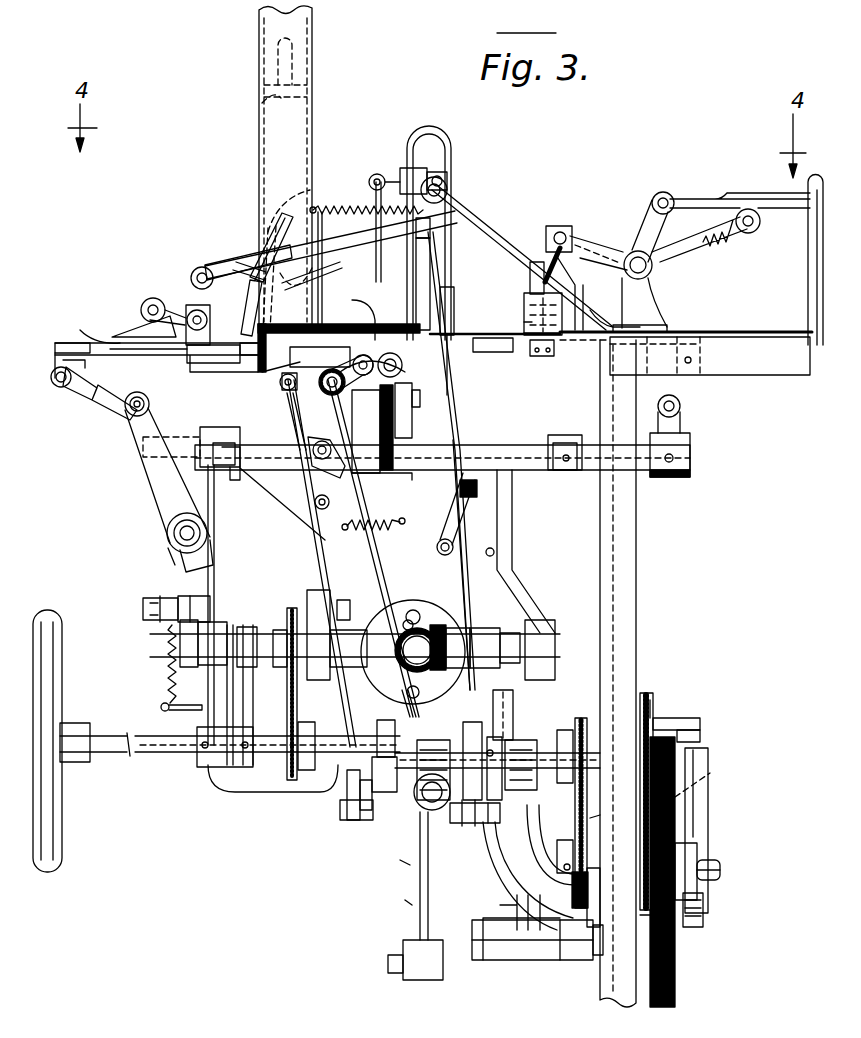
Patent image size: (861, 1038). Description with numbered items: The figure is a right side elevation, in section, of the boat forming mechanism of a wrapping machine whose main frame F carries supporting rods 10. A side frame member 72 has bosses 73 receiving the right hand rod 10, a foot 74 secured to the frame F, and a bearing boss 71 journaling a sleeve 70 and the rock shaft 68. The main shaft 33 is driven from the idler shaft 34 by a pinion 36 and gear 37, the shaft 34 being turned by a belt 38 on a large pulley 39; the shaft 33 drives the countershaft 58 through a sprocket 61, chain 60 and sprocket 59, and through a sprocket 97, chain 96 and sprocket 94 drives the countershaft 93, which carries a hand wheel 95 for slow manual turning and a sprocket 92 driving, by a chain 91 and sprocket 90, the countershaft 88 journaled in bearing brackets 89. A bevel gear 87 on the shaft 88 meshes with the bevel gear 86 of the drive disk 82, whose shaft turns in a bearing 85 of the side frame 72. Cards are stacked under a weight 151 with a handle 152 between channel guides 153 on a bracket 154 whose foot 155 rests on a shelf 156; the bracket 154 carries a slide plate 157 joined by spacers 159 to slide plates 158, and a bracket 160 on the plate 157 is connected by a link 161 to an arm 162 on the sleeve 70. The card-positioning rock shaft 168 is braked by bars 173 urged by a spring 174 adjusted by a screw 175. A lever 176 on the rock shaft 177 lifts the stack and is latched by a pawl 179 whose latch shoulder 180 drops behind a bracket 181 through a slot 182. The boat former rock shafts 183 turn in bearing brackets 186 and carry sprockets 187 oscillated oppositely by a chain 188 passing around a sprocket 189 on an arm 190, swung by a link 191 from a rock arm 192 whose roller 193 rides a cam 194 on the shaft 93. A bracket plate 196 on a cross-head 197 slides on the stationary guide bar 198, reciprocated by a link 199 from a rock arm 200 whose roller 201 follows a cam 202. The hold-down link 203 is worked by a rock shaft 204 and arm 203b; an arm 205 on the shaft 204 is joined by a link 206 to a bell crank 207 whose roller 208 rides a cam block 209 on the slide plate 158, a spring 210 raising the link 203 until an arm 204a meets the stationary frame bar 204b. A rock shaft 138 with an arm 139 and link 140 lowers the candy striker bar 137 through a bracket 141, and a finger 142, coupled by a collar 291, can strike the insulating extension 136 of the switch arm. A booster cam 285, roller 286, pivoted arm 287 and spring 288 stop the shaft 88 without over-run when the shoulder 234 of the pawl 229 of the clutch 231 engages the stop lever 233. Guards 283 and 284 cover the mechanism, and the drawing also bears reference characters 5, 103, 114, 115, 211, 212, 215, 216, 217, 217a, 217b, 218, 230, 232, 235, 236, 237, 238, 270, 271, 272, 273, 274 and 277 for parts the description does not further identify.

The supporting rods 10 is at (480, 446).
The switch box 5 is at (520, 300).
The main shaft 33 is at (720, 866).
The idler shaft 34 is at (690, 830).
The pinion 36 is at (710, 776).
The gear 37 is at (677, 955).
The belt 38 is at (700, 750).
The large pulley 39 is at (704, 920).
The countershaft 58 is at (685, 718).
The sprocket 59 is at (650, 690).
The chain 60 is at (640, 781).
The sprocket 61 is at (640, 916).
The rock shaft 68 is at (178, 533).
The sleeve 70 is at (165, 512).
The bearing boss 71 is at (214, 518).
The side frame member 72 is at (555, 680).
The bosses 73 is at (552, 438).
The foot 74 is at (555, 960).
The drive disk 82 is at (402, 617).
The bearing 85 is at (448, 620).
The bevel gear 86 is at (424, 690).
The bevel gear 87 is at (428, 612).
The countershaft 88 is at (485, 640).
The bearing brackets 89 is at (520, 712).
The sprocket 90 is at (295, 630).
The chain 91 is at (297, 700).
The sprocket 92 is at (305, 730).
The countershaft 93 is at (272, 752).
The sprocket 94 is at (572, 785).
The hand wheel 95 is at (57, 798).
The chain 96 is at (588, 818).
The sprocket 97 is at (570, 848).
The rod 103 is at (584, 290).
The shaft 114 is at (507, 911).
The collar 115 is at (598, 957).
The insulating extension 136 is at (530, 290).
The candy striker bar 137 is at (524, 333).
The rock shaft 138 is at (650, 270).
The arm 139 is at (592, 238).
The link 140 is at (548, 250).
The bracket 141 is at (522, 323).
The finger 142 is at (540, 280).
The weight 151 is at (262, 108).
The handle 152 is at (294, 52).
The channel-shaped guides 153 is at (262, 147).
The bracket 154 is at (200, 365).
The foot 155 is at (245, 482).
The shelf 156 is at (460, 490).
The slide plate 157 is at (150, 365).
The slide plates 158 is at (94, 329).
The spacers 159 is at (140, 352).
The bracket 160 is at (72, 372).
The link 161 is at (102, 400).
The arm 162 is at (150, 478).
The rock shaft 168 is at (325, 348).
The bars 173 is at (339, 348).
The spring 174 is at (262, 378).
The screw 175 is at (325, 328).
The lever 176 is at (306, 195).
The rock shaft 177 is at (190, 308).
The pawl 179 is at (305, 250).
The latch shoulder 180 is at (296, 282).
The bracket 181 is at (312, 282).
The slot 182 is at (258, 254).
The boat former rock shafts 183 is at (400, 372).
The bearing brackets 186 is at (393, 420).
The sprockets 187 is at (362, 311).
The chain 188 is at (440, 387).
The sprocket 189 is at (332, 395).
The arm 190 is at (282, 395).
The link 191 is at (318, 556).
The rock arm 192 is at (372, 822).
The roller 193 is at (395, 820).
The cam 194 is at (380, 722).
The bracket plate 196 is at (440, 296).
The cross-head 197 is at (431, 256).
The stationary guide bar 198 is at (458, 415).
The link 199 is at (485, 872).
The rock arm 200 is at (490, 822).
The roller 201 is at (468, 826).
The cam 202 is at (463, 730).
The hold-down link 203 is at (377, 273).
The arm 203b is at (377, 174).
The rock shaft 204 is at (447, 190).
The arm 204a is at (405, 168).
The stationary frame bar 204b is at (440, 172).
The arm 205 is at (455, 204).
The link 206 is at (326, 269).
The bell crank 207 is at (200, 267).
The roller 208 is at (143, 303).
The cam block 209 is at (135, 330).
The spring 210 is at (345, 204).
The block 211 is at (426, 398).
The column 212 is at (352, 428).
The bar 215 is at (397, 452).
The lever 216 is at (395, 908).
The lever 217 is at (420, 745).
The arm 217a is at (408, 870).
The arm 217b is at (405, 900).
The arc plate 218 is at (500, 880).
The pawl 229 is at (331, 600).
The nut 230 is at (356, 604).
The clutch 231 is at (367, 678).
The bearing 232 is at (280, 634).
The stop lever 233 is at (305, 522).
The shoulder 234 is at (325, 590).
The pivot 235 is at (308, 473).
The rod 236 is at (446, 565).
The lever 237 is at (452, 526).
The plate 238 is at (512, 500).
The beam 270 is at (765, 335).
The frame 271 is at (808, 258).
The beam 272 is at (775, 205).
The pivot 273 is at (664, 192).
The lever 274 is at (648, 218).
The spring 277 is at (350, 532).
The guard 283 is at (452, 138).
The guard 284 is at (452, 355).
The booster cam 285 is at (195, 670).
The roller 286 is at (204, 600).
The pivoted arm 287 is at (143, 605).
The spring 288 is at (168, 652).
The collar 291 is at (584, 300).
The main frame F is at (640, 640).